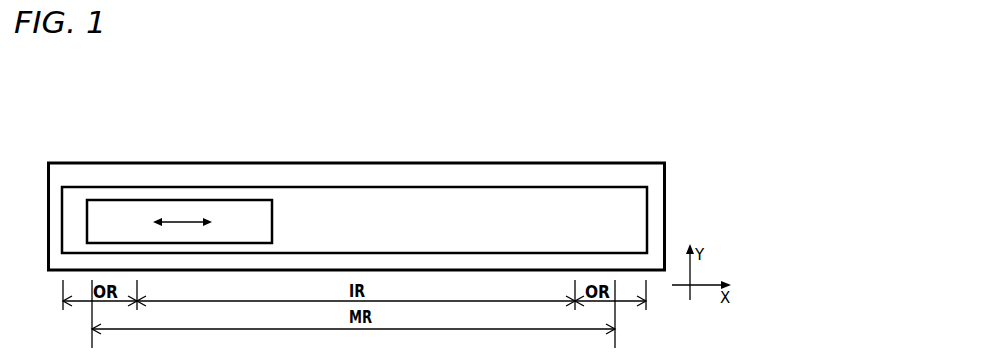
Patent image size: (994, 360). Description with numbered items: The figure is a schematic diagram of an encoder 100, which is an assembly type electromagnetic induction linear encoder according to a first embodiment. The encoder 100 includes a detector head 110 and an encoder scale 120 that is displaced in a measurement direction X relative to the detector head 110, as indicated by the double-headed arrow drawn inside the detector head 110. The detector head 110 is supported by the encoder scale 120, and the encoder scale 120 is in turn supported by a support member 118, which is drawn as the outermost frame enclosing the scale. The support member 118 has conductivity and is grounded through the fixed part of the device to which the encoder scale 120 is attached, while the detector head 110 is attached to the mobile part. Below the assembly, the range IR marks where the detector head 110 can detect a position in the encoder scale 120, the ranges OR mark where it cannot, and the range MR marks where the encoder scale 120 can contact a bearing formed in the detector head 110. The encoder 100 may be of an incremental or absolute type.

The encoder 100 is at (453, 176).
The detector head 110 is at (197, 208).
The support member 118 is at (653, 182).
The encoder scale 120 is at (408, 205).